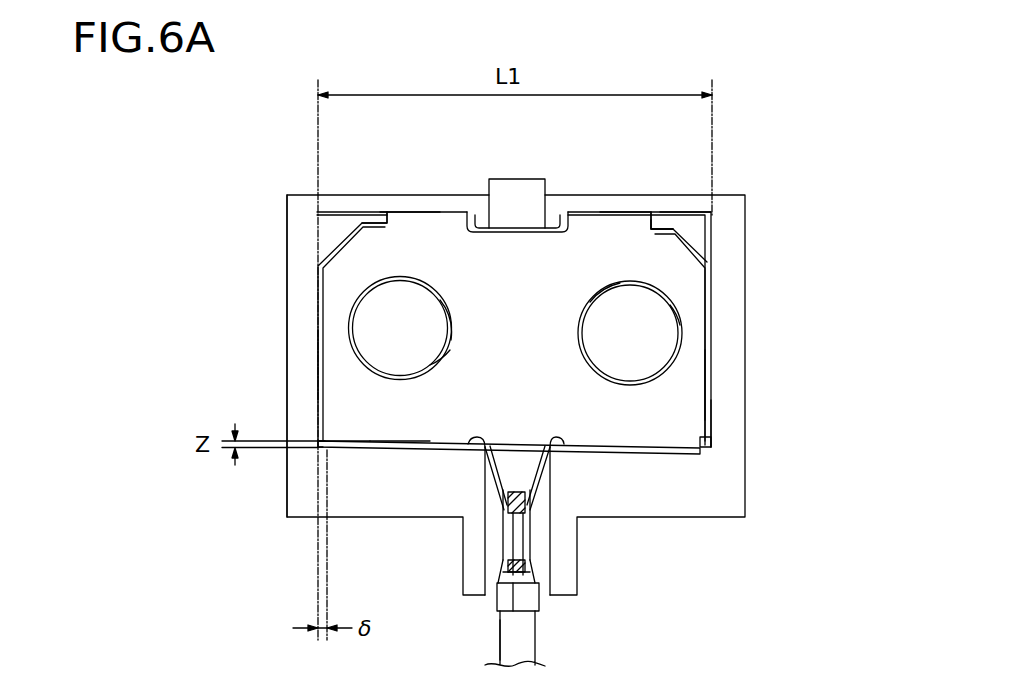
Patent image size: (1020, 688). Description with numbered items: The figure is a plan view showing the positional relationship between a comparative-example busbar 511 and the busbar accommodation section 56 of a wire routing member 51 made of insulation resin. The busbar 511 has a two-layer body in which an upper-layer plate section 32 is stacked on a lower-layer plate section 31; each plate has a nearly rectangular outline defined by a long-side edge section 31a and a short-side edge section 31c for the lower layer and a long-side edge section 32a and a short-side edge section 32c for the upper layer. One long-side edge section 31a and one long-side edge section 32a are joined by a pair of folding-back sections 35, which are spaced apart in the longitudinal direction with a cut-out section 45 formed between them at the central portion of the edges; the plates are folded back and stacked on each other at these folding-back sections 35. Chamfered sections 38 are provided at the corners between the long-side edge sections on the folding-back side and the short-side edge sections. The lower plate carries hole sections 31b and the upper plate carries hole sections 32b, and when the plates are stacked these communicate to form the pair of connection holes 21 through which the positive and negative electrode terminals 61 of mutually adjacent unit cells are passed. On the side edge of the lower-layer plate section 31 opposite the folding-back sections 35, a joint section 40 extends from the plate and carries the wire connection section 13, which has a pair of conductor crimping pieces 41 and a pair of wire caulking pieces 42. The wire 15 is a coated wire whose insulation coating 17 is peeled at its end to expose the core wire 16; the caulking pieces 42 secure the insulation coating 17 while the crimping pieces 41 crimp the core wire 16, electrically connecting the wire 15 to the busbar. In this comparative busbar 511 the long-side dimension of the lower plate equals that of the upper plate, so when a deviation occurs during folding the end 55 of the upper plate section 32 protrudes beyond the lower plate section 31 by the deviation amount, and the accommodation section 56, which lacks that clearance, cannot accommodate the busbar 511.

The wire routing member 51 is at (758, 505).
The busbar 511 is at (346, 206).
The plate section 31 is at (664, 420).
The plate section 32 is at (683, 356).
The folding-back sections 35 is at (406, 212).
The cut-out section 45 is at (509, 232).
The chamfered sections 38 is at (338, 243).
The connection holes 21 is at (348, 295).
The electrode terminals 61 is at (397, 340).
The hole section 31b is at (452, 338).
The hole section 32b is at (443, 363).
The end 55 is at (313, 367).
The busbar accommodation section 56 is at (704, 380).
The short-side edge section 31c is at (712, 425).
The short-side edge section 32c is at (316, 402).
The long-side edge section 31a is at (358, 450).
The long-side edge section 32a is at (383, 450).
The wire connection section 13 is at (551, 556).
The joint section 40 is at (528, 468).
The core wire 16 is at (503, 508).
The conductor crimping pieces 41 is at (544, 555).
The wire caulking pieces 42 is at (498, 599).
The wire 15 is at (546, 640).
The insulation coating 17 is at (498, 647).